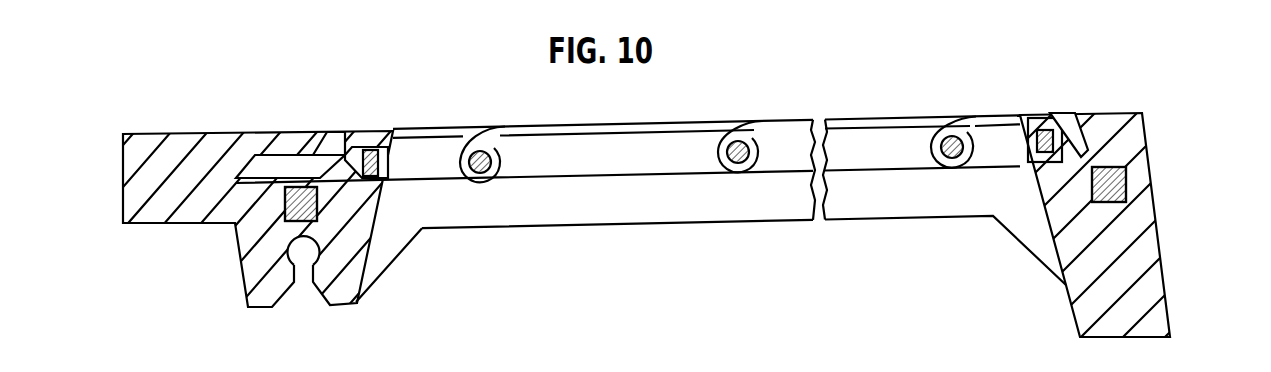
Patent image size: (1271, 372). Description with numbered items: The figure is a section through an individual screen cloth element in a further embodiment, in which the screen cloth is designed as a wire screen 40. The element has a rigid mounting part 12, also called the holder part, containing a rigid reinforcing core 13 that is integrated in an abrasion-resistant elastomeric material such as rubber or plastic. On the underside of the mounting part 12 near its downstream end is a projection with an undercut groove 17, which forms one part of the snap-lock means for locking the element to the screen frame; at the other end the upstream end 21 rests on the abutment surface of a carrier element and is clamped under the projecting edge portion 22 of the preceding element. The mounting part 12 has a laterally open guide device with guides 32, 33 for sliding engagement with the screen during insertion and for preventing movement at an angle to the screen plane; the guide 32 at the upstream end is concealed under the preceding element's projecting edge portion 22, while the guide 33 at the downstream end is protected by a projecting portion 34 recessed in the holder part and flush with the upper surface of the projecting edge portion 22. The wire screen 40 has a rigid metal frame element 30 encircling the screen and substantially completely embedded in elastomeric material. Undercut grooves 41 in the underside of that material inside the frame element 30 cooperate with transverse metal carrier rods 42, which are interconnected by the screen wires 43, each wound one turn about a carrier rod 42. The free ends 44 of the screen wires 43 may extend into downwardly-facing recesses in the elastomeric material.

The mounting part 12 is at (760, 229).
The reinforcing core 13 is at (1128, 180).
The undercut groove 17 is at (302, 280).
The upstream end 21 is at (1153, 270).
The projecting edge portion 22 is at (155, 179).
The frame element 30 is at (372, 150).
The guide 32 is at (1080, 122).
The guide 33 is at (318, 164).
The projecting portion 34 is at (319, 147).
The wire screen 40 is at (796, 112).
The undercut grooves 41 is at (935, 168).
The carrier rods 42 is at (494, 161).
The screen wires 43 is at (633, 131).
The free ends 44 is at (447, 133).